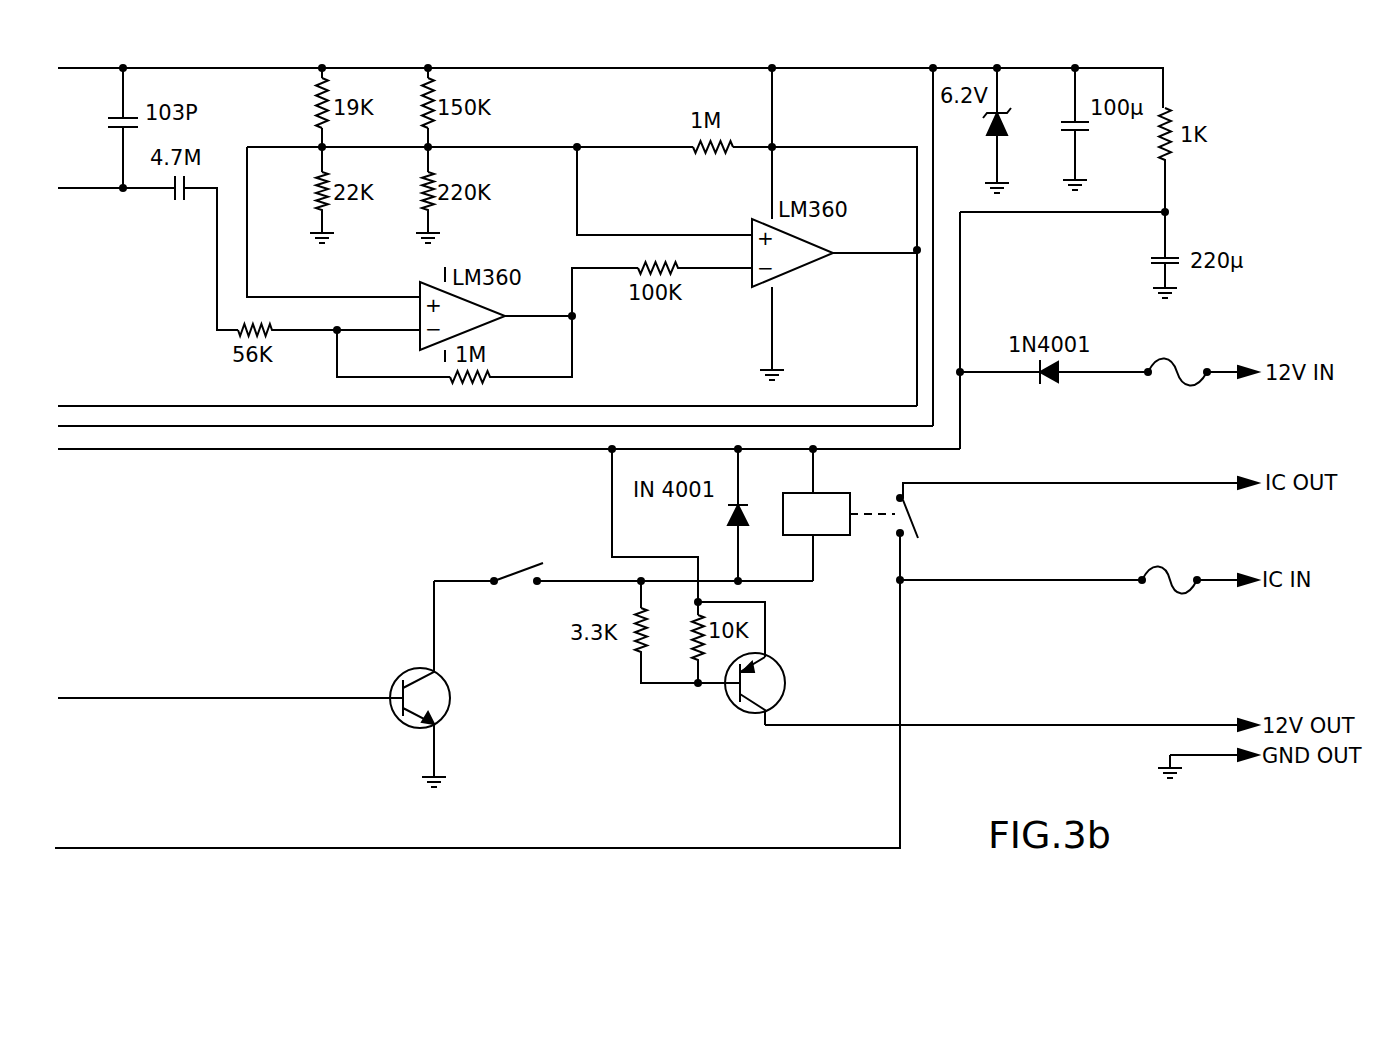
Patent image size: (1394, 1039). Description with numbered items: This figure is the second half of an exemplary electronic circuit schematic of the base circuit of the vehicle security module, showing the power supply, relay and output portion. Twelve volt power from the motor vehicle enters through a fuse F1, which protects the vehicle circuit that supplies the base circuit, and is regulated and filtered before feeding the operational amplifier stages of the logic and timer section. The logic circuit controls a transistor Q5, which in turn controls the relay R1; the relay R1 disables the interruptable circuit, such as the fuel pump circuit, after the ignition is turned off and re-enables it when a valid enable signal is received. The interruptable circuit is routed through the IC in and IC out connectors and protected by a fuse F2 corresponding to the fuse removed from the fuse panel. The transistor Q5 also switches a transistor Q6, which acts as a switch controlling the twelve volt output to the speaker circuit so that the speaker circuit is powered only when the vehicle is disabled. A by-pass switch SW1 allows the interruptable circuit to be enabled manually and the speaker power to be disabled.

The transistor Q5 is at (293, 684).
The transistor Q6 is at (734, 697).
The relay R1 is at (839, 515).
The fuse F1 is at (1177, 389).
The fuse F2 is at (1169, 591).
The by-pass switch SW1 is at (520, 560).